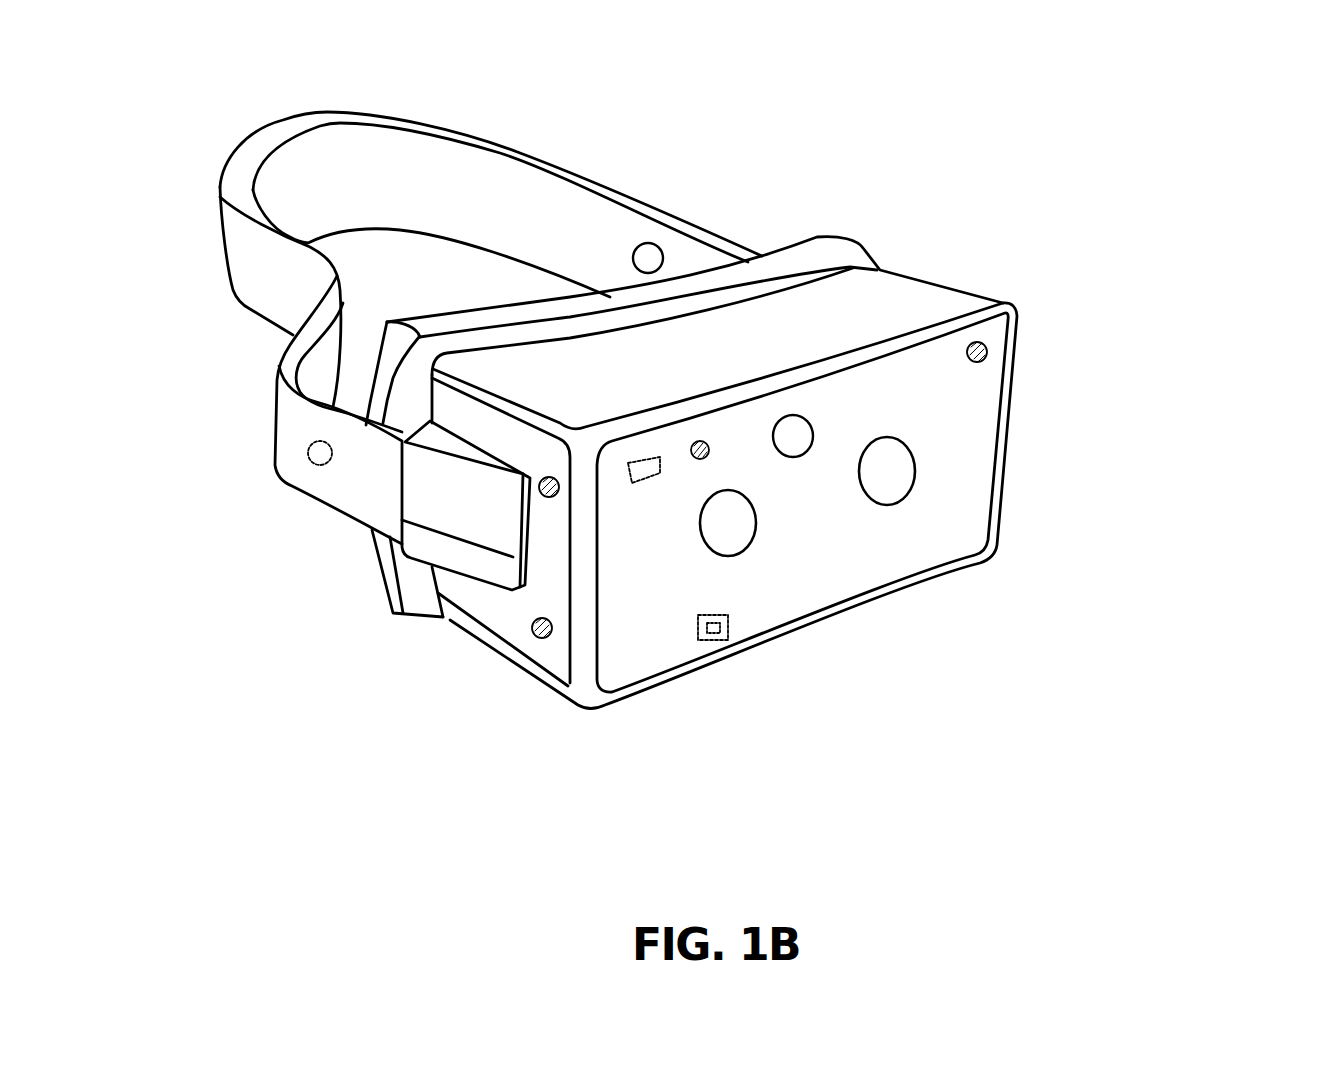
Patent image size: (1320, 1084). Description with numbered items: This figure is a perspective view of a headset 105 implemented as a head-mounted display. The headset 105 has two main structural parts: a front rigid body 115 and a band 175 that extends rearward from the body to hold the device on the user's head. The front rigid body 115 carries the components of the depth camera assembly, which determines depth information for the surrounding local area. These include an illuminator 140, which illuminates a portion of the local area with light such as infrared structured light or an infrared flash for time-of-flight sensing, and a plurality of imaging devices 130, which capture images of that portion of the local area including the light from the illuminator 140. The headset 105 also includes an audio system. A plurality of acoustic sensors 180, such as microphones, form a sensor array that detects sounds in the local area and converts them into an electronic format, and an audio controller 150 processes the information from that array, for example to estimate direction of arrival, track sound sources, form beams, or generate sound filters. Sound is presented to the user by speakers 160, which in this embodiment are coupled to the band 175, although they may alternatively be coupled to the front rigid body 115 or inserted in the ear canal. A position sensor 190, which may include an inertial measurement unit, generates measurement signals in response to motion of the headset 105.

The headset 105 is at (140, 92).
The band 175 is at (622, 195).
The front rigid body 115 is at (1010, 302).
The illuminator 140 is at (808, 420).
The imaging device 130 is at (753, 545).
The position sensor 190 is at (729, 628).
The audio controller 150 is at (630, 485).
The acoustic sensor 180 is at (532, 625).
The speaker 160 is at (310, 465).